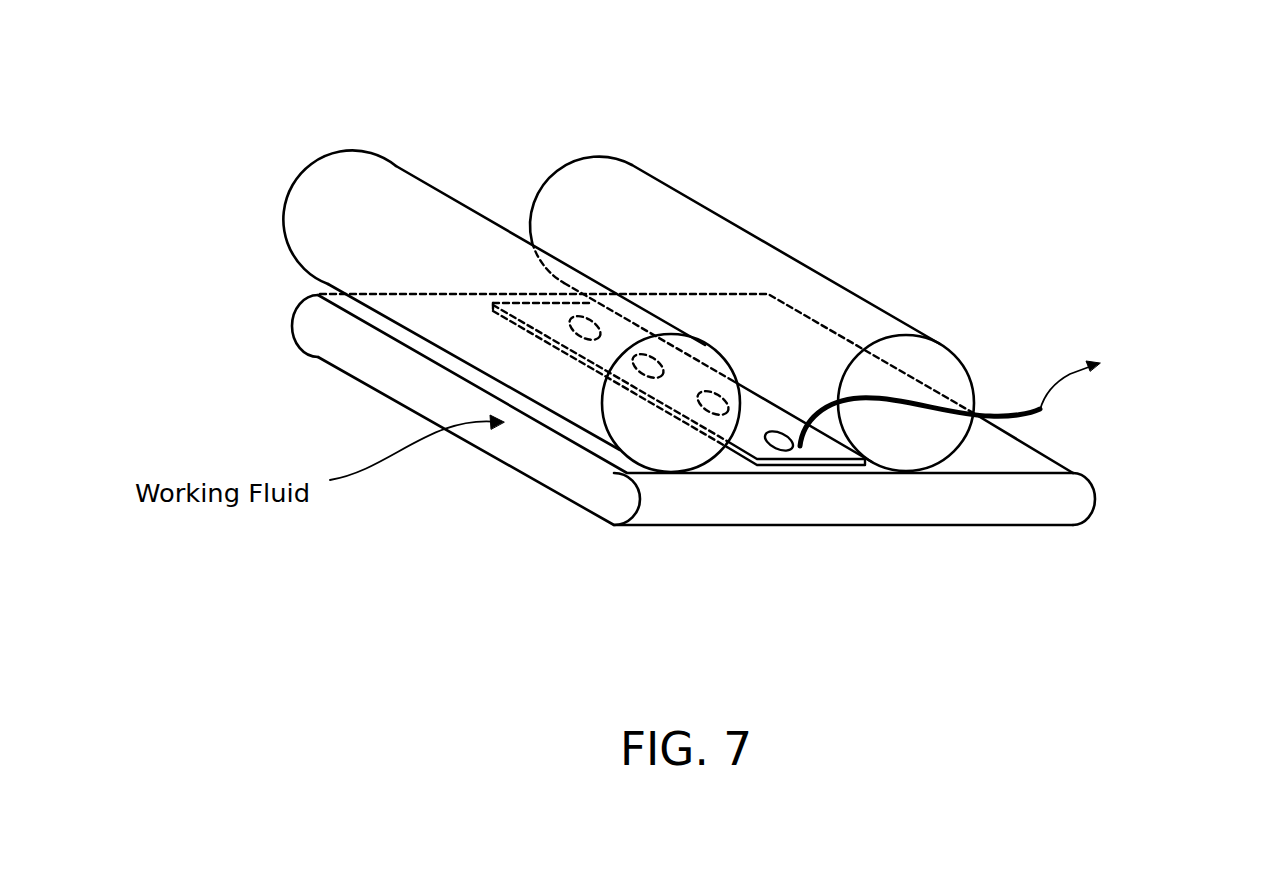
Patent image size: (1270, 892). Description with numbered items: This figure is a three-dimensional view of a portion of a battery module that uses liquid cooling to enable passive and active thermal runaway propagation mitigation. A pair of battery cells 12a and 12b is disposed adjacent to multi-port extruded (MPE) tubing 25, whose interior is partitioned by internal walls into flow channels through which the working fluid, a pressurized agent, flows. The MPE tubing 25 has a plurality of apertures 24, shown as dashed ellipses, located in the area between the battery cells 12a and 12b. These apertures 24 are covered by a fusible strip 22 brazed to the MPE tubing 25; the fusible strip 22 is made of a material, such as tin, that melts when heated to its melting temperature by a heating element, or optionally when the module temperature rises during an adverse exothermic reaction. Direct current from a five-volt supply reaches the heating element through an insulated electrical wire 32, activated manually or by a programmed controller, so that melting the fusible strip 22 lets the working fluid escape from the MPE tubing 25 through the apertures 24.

The battery cell 12a is at (325, 165).
The battery cell 12b is at (635, 163).
The fusible strip 22 is at (525, 305).
The apertures 24 is at (785, 450).
The multi-port extruded (MPE) tubing 25 is at (297, 297).
The insulated electrical wire 32 is at (1004, 413).